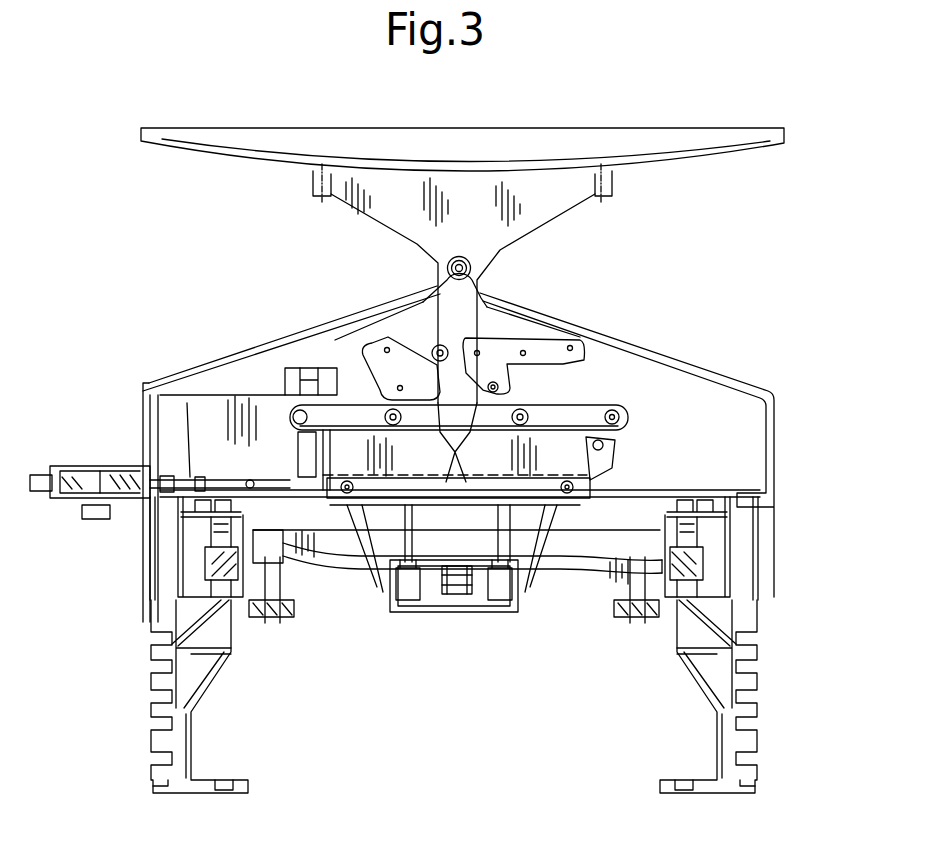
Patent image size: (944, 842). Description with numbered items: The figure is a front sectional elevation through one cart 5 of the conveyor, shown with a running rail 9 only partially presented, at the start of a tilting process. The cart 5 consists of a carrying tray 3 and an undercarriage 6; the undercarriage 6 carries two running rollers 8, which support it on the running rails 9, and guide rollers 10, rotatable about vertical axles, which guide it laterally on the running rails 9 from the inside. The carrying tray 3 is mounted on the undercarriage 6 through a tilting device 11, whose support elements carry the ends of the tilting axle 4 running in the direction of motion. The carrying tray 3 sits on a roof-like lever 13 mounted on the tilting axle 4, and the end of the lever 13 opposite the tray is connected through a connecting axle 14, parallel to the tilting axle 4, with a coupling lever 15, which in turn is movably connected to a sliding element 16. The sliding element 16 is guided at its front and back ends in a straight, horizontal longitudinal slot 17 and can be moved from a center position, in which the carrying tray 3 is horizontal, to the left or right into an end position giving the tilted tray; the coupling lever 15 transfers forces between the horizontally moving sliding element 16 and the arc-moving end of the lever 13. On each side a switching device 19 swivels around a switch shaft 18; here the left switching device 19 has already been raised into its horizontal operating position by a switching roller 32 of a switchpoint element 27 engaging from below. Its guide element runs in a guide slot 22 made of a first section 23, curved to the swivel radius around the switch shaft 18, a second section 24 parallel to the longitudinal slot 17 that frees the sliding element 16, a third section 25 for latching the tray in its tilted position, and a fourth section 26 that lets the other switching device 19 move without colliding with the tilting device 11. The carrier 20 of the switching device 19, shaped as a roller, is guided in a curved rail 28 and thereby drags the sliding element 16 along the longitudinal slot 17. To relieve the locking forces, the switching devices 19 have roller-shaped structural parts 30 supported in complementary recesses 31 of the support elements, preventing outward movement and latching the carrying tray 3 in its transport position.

The carrying tray 3 is at (682, 160).
The tilting axle 4 is at (471, 268).
The cart 5 is at (61, 222).
The undercarriage 6 is at (578, 562).
The running rollers 8 is at (715, 587).
The running rails 9 is at (151, 688).
The guide rollers 10 is at (625, 617).
The tilting device 11 is at (240, 423).
The lever 13 is at (542, 206).
The connecting axle 14 is at (460, 560).
The coupling lever 15 is at (408, 568).
The sliding element 16 is at (520, 573).
The longitudinal slot 17 is at (615, 405).
The switch shaft 18 is at (572, 410).
The switching device 19 is at (447, 450).
The carrier 20 is at (300, 380).
The guide slot 22 is at (437, 440).
The first section 23 is at (483, 363).
The second section 24 is at (460, 432).
The third section 25 is at (392, 430).
The fourth section 26 is at (548, 356).
The switchpoint element 27 is at (38, 559).
The curved rail 28 is at (290, 385).
The structural parts 30 is at (323, 530).
The recesses 31 is at (340, 530).
The switching roller 32 is at (300, 438).